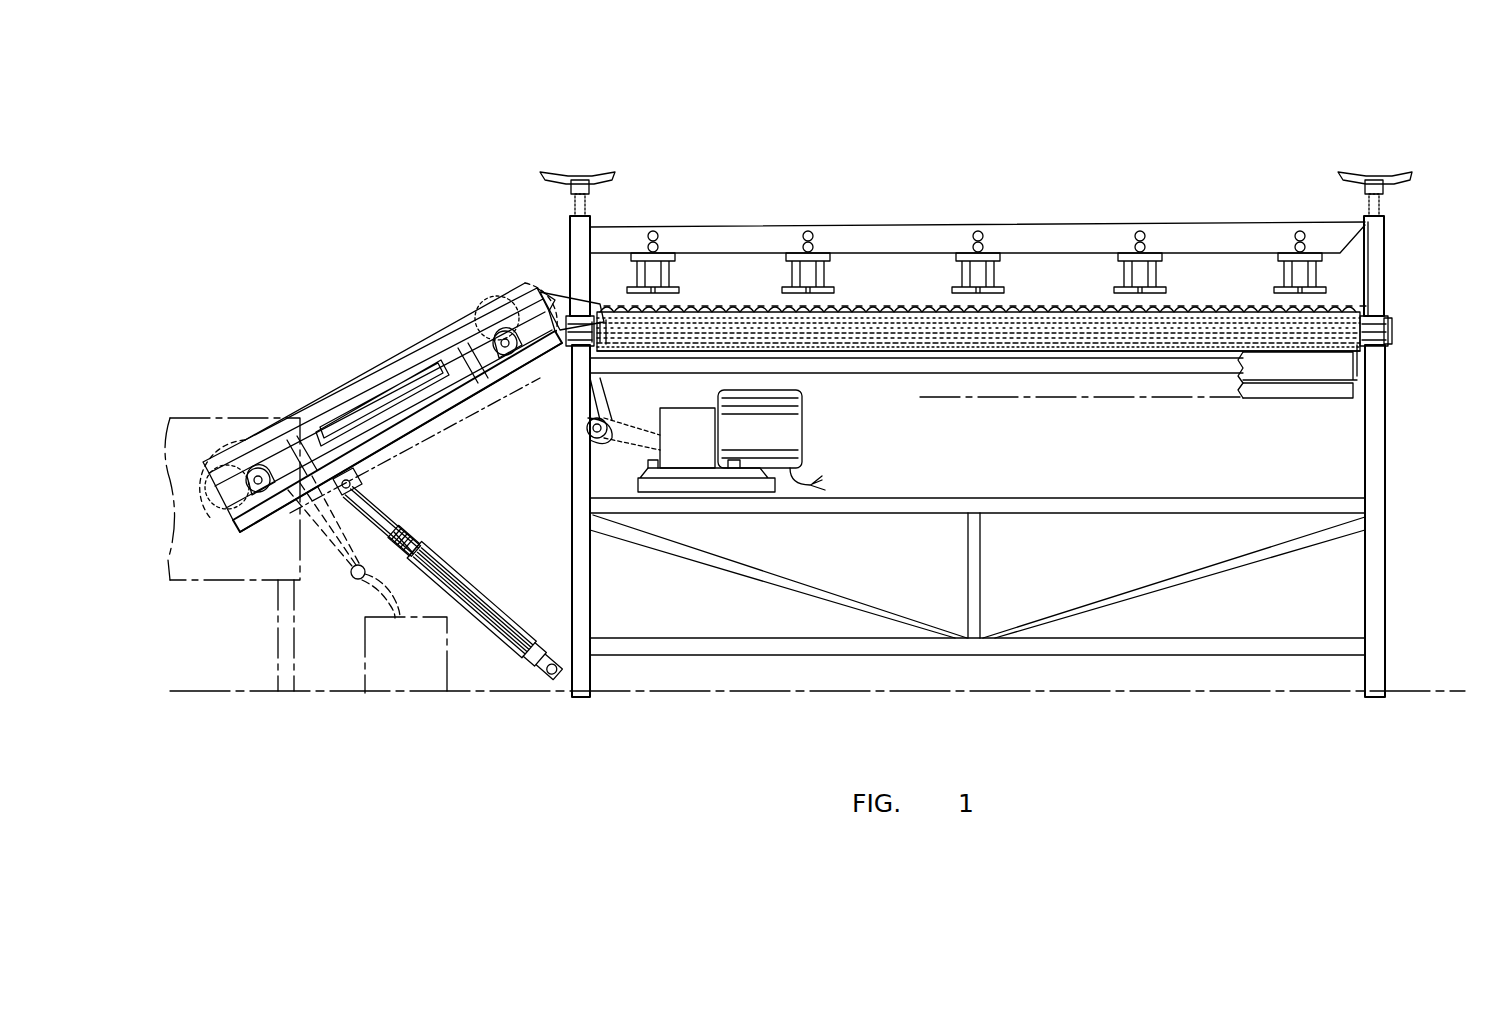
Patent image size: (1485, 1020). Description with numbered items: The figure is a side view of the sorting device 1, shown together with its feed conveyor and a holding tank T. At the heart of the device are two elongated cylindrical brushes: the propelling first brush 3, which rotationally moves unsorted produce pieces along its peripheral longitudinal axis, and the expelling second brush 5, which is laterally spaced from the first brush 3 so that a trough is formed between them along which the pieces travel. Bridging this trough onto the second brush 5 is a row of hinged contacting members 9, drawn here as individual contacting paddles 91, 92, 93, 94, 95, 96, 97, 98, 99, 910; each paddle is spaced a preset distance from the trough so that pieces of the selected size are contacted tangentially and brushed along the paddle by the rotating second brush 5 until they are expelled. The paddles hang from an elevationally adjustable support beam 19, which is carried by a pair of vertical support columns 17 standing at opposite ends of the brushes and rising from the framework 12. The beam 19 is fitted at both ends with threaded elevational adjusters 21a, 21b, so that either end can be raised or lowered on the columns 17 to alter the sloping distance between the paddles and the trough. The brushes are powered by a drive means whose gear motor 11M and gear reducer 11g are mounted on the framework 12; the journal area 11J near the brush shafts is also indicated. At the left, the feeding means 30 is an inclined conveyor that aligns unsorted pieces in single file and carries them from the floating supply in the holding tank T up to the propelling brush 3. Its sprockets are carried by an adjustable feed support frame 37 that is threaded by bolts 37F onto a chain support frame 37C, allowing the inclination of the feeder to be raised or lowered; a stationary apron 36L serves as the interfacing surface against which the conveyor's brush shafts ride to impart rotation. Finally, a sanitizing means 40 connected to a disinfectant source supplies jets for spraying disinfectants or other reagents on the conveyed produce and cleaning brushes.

The sorting device 1 is at (1388, 375).
The first brush 3 is at (888, 312).
The second brush 5 is at (965, 350).
The contacting member 9 is at (1326, 275).
The contacting paddle 91 is at (636, 262).
The contacting paddle 92 is at (672, 262).
The contacting paddle 93 is at (790, 262).
The contacting paddle 94 is at (828, 262).
The contacting paddle 95 is at (960, 262).
The contacting paddle 96 is at (998, 262).
The contacting paddle 97 is at (1120, 262).
The contacting paddle 98 is at (1162, 264).
The contacting paddle 99 is at (1280, 272).
The contacting paddle 910 is at (1320, 266).
The journal 11J is at (598, 408).
The gear reducer 11g is at (700, 452).
The gear motor 11M is at (785, 440).
The framework 12 is at (586, 606).
The vertical support column 17 is at (1386, 302).
The support beam 19 is at (895, 226).
The threaded elevational adjuster 21a is at (1374, 172).
The threaded elevational adjuster 21b is at (580, 172).
The feeding means 30 is at (306, 395).
The interfacing locomoting surface 36L is at (372, 407).
The feed support frame 37 is at (494, 604).
The chain support frame 37C is at (440, 413).
The threaded bolt 37F is at (422, 546).
The sanitizing means 40 is at (352, 585).
The holding tank T is at (210, 582).